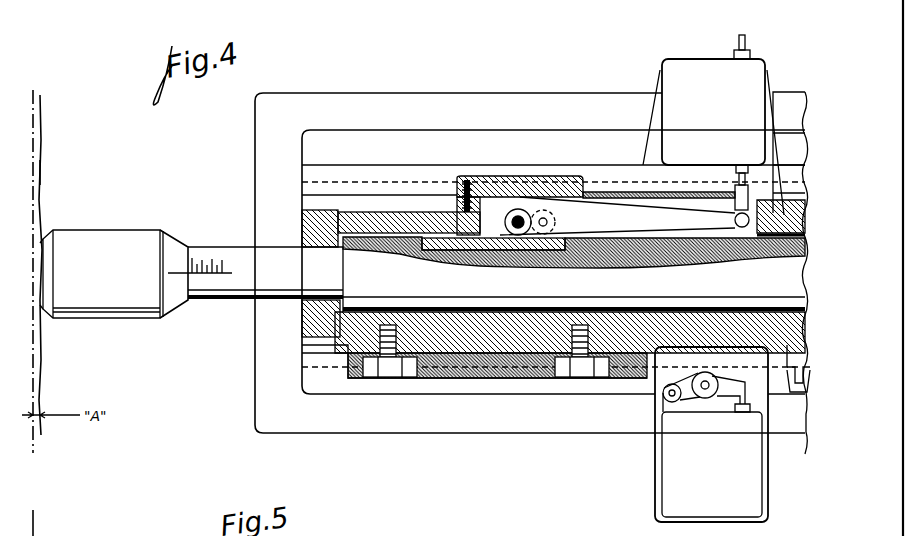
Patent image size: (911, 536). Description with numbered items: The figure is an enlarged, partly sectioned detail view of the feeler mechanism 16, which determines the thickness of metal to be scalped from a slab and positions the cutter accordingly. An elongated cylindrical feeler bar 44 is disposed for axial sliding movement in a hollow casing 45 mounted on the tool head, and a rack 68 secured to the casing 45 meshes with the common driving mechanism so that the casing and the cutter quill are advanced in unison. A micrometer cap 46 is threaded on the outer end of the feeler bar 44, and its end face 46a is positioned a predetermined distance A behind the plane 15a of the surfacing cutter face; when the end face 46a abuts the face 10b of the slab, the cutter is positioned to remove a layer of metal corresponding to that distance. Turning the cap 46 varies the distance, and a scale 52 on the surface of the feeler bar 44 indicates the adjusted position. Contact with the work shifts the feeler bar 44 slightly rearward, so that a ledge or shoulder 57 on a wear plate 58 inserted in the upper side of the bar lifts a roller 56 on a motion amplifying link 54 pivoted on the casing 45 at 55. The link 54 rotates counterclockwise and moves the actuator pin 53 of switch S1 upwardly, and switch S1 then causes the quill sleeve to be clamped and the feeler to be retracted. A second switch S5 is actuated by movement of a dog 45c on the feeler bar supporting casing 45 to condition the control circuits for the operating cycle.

In FIG. 4, the plane of the surfacing cutter face 15a is at (40, 95).
In FIG. 5, the plane of the surfacing cutter face 15a is at (37, 526).
In FIG. 4, the face of the slab 10b is at (40, 172).
In FIG. 4, the feeler mechanism 16 is at (250, 166).
In FIG. 4, the feeler bar 44 is at (236, 297).
In FIG. 4, the casing 45 is at (346, 212).
In FIG. 4, the dog 45c is at (628, 378).
In FIG. 4, the micrometer cap 46 is at (115, 246).
In FIG. 4, the end face of the cap 46a is at (38, 243).
In FIG. 4, the scale 52 is at (210, 257).
In FIG. 4, the actuator pin 53 is at (746, 42).
In FIG. 4, the motion amplifying link 54 is at (672, 220).
In FIG. 4, the pivot 55 is at (503, 232).
In FIG. 4, the roller 56 is at (556, 222).
In FIG. 4, the ledge or shoulder 57 is at (534, 232).
In FIG. 4, the wear plate 58 is at (444, 260).
In FIG. 4, the rack 68 is at (788, 378).
In FIG. 4, the switch S1 is at (656, 135).
In FIG. 4, the switch S5 is at (668, 456).